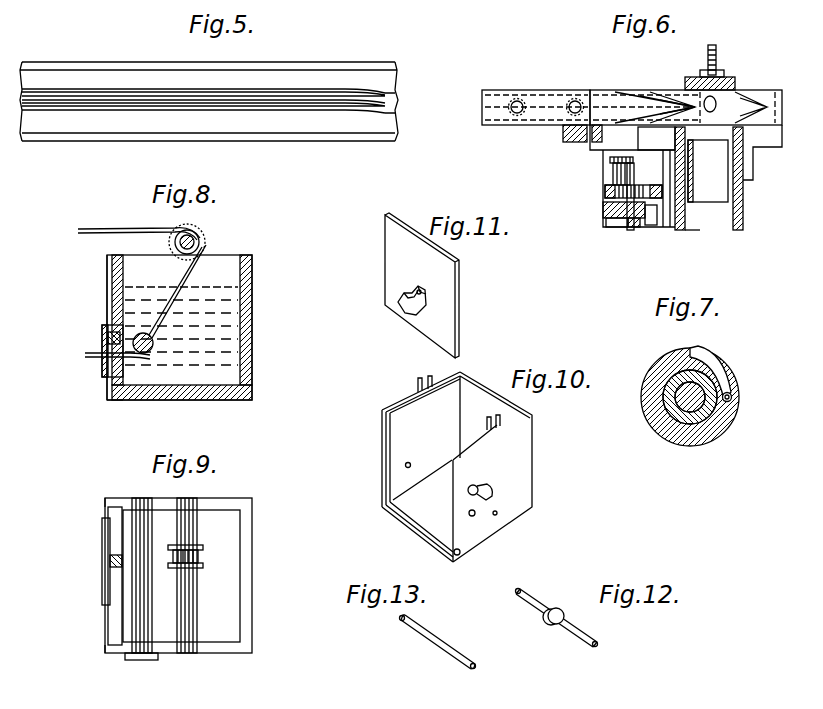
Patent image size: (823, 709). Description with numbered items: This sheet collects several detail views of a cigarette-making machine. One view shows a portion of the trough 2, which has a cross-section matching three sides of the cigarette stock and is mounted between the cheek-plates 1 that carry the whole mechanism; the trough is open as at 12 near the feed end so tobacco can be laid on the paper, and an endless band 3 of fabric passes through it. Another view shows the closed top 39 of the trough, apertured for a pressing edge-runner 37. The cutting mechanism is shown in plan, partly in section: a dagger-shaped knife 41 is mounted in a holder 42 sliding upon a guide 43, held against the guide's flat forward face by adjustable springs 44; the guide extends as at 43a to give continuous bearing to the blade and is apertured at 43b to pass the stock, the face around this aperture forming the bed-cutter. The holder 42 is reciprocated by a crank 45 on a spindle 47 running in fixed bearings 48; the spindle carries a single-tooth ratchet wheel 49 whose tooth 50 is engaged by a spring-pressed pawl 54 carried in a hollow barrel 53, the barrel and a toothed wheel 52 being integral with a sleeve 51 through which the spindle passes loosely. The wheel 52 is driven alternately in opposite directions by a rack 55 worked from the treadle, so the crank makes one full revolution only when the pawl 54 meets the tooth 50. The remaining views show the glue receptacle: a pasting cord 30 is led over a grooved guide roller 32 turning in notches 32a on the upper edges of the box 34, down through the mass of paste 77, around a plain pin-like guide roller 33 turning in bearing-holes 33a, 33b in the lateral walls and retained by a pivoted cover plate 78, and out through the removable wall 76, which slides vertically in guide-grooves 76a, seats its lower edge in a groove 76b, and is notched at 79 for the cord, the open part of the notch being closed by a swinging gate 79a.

In FIG. 5, the cheek-plate 1 is at (282, 137).
In FIG. 6, the cheek-plate 1 is at (738, 229).
In FIG. 5, the trough 2 is at (399, 102).
In FIG. 6, the endless band 3 is at (712, 201).
In FIG. 5, the open portion of trough 12 is at (108, 92).
In FIG. 8, the cord 30 is at (100, 229).
In FIG. 8, the grooved guide roller 32 is at (206, 243).
In FIG. 9, the grooved guide roller 32 is at (204, 558).
In FIG. 12, the grooved guide roller 32 is at (550, 626).
In FIG. 9, the notches 32a is at (191, 500).
In FIG. 10, the notches 32a is at (417, 379).
In FIG. 8, the plain guide roller 33 is at (147, 353).
In FIG. 9, the plain guide roller 33 is at (152, 605).
In FIG. 13, the plain guide roller 33 is at (432, 640).
In FIG. 10, the bearing-hole 33a is at (408, 462).
In FIG. 10, the bearing-hole 33b is at (478, 518).
In FIG. 8, the box 34 is at (253, 326).
In FIG. 9, the box 34 is at (252, 613).
In FIG. 10, the box 34 is at (522, 401).
In FIG. 6, the edge-runner 37 is at (706, 53).
In FIG. 6, the closed top 39 is at (728, 78).
In FIG. 6, the knife 41 is at (636, 96).
In FIG. 6, the holder 42 is at (523, 127).
In FIG. 6, the guide 43 is at (600, 92).
In FIG. 6, the extension of knife-guide 43a is at (762, 97).
In FIG. 6, the aperture 43b is at (712, 113).
In FIG. 6, the adjustable springs 44 is at (575, 100).
In FIG. 6, the crank 45 is at (576, 140).
In FIG. 6, the spindle 47 is at (631, 229).
In FIG. 7, the spindle 47 is at (676, 424).
In FIG. 6, the fixed bearings 48 is at (594, 142).
In FIG. 6, the ratchet wheel 49 is at (624, 226).
In FIG. 7, the ratchet wheel 49 is at (656, 417).
In FIG. 7, the tooth 50 is at (720, 380).
In FIG. 6, the sleeve 51 is at (610, 160).
In FIG. 6, the toothed wheel 52 is at (606, 193).
In FIG. 6, the hollow barrel 53 is at (608, 217).
In FIG. 7, the hollow barrel 53 is at (645, 401).
In FIG. 7, the spring-pressed pawl 54 is at (733, 396).
In FIG. 6, the rack 55 is at (670, 230).
In FIG. 8, the wall 76 is at (107, 302).
In FIG. 9, the wall 76 is at (108, 621).
In FIG. 11, the wall 76 is at (390, 253).
In FIG. 9, the guide-grooves 76a is at (115, 500).
In FIG. 10, the guide-grooves 76a is at (388, 439).
In FIG. 8, the groove 76b is at (113, 400).
In FIG. 10, the groove 76b is at (400, 517).
In FIG. 8, the paste 77 is at (213, 287).
In FIG. 9, the cover plate 78 is at (142, 662).
In FIG. 10, the cover plate 78 is at (493, 491).
In FIG. 9, the notch 79 is at (112, 559).
In FIG. 11, the notch 79 is at (406, 318).
In FIG. 8, the swinging gate 79a is at (103, 368).
In FIG. 9, the swinging gate 79a is at (102, 535).
In FIG. 11, the swinging gate 79a is at (398, 301).